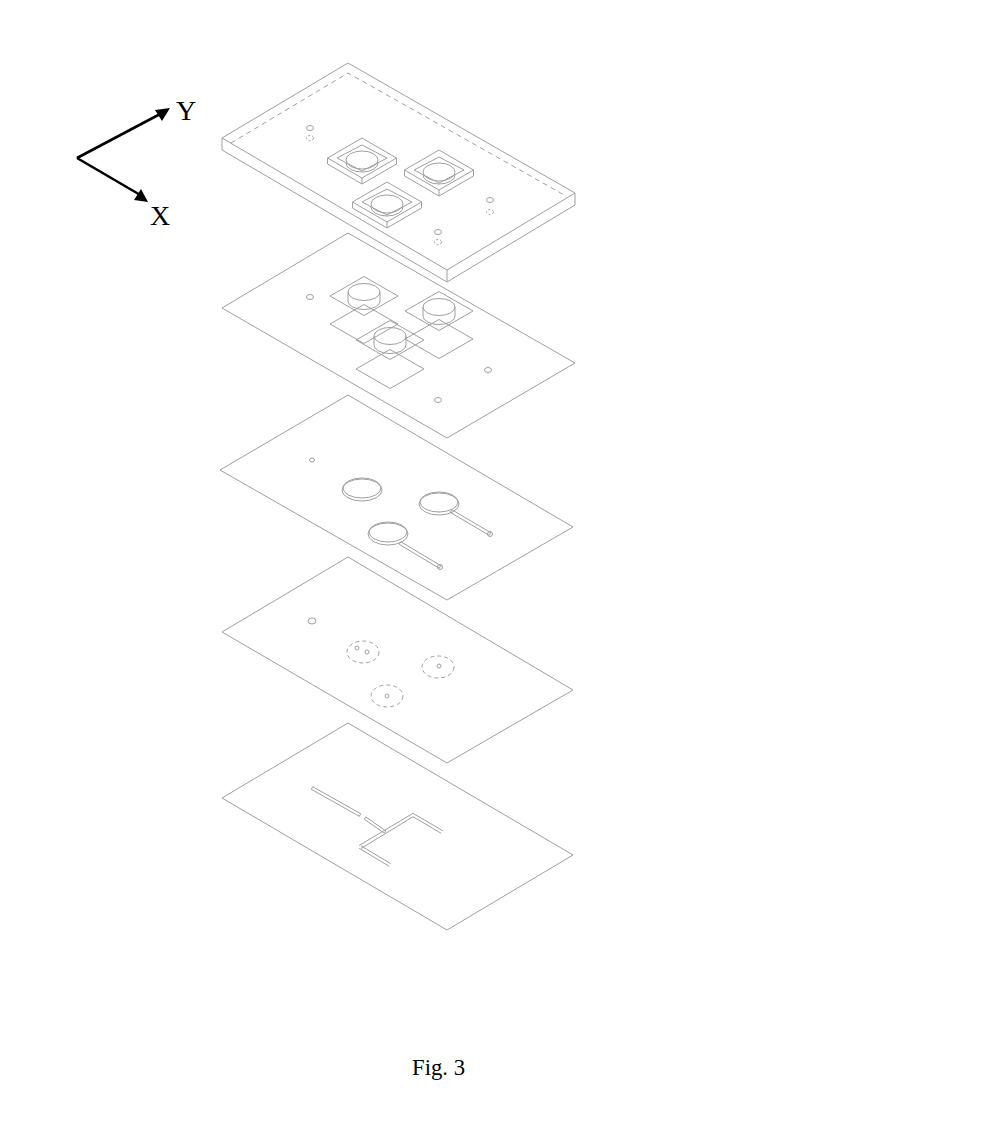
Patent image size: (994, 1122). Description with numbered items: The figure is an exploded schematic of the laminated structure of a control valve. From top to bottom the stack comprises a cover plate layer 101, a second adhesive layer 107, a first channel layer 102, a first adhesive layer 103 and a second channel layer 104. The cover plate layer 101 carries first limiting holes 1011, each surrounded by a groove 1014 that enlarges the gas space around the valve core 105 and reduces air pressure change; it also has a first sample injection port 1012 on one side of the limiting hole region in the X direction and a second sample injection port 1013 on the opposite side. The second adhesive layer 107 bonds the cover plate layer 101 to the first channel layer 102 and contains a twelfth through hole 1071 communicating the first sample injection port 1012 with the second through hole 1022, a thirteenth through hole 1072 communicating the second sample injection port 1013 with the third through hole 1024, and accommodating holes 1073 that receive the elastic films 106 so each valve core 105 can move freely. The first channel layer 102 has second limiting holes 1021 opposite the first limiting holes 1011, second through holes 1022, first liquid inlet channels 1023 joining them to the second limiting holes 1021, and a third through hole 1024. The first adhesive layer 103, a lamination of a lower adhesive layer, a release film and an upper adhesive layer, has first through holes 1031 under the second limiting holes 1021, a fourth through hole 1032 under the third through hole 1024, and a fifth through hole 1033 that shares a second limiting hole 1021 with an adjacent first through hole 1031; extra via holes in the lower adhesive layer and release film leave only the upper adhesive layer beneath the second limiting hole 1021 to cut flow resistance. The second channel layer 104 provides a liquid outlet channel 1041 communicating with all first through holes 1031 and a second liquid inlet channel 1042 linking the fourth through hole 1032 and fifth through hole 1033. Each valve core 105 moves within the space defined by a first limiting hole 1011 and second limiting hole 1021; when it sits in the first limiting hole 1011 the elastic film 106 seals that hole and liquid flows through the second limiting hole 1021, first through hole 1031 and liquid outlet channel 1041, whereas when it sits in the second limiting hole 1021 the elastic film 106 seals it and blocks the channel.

The cover plate layer 101 is at (550, 182).
The first limiting hole 1011 is at (364, 164).
The first sample injection port 1012 is at (442, 233).
The second sample injection port 1013 is at (305, 126).
The groove 1014 is at (447, 168).
The valve core 105 is at (360, 292).
The elastic film 106 is at (365, 331).
The second adhesive layer 107 is at (575, 363).
The twelfth through hole 1071 is at (442, 401).
The thirteenth through hole 1072 is at (306, 296).
The accommodating hole 1073 is at (347, 330).
The first channel layer 102 is at (553, 542).
The second limiting hole 1021 is at (360, 489).
The second through hole 1022 is at (442, 568).
The first liquid inlet channel 1023 is at (477, 522).
The third through hole 1024 is at (309, 460).
The first adhesive layer 103 is at (573, 690).
The first through hole 1031 is at (369, 653).
The fourth through hole 1032 is at (308, 620).
The fifth through hole 1033 is at (355, 649).
The second channel layer 104 is at (573, 855).
The liquid outlet channel 1041 is at (410, 822).
The second liquid inlet channel 1042 is at (330, 803).